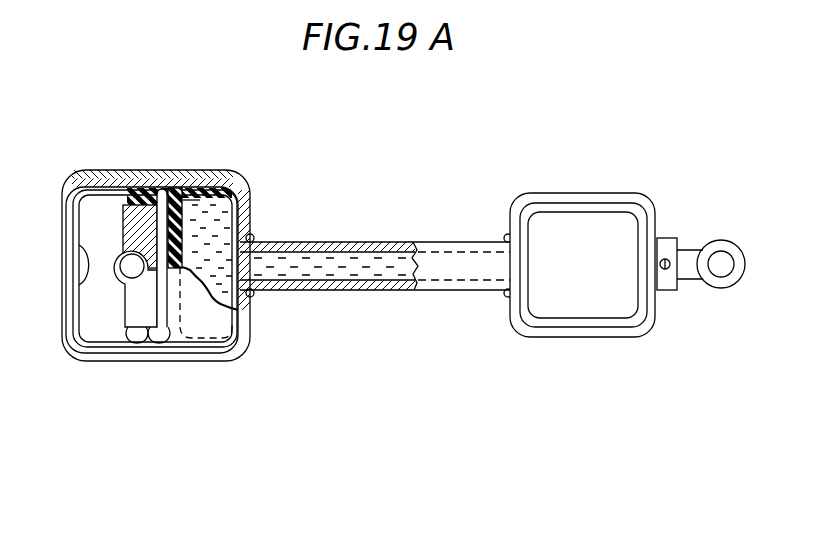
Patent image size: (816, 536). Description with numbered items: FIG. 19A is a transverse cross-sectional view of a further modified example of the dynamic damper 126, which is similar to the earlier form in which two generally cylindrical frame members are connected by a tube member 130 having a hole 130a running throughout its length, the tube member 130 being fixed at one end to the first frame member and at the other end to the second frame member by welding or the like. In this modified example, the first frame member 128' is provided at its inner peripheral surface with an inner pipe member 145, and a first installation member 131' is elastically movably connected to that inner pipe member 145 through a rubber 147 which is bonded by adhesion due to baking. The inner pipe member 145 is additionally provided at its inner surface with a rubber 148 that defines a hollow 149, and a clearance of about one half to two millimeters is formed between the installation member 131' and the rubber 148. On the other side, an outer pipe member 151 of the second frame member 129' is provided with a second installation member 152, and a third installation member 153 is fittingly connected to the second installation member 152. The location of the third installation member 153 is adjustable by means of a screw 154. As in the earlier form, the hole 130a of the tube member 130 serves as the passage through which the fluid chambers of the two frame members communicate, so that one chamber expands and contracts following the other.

The dynamic damper 126 is at (330, 203).
The first frame member 128' is at (158, 229).
The inner pipe member 145 is at (102, 172).
The first installation member 131' is at (179, 197).
The rubber 147 is at (127, 202).
The rubber 148 is at (203, 190).
The hollow 149 is at (228, 216).
The tube member 130 is at (382, 243).
The hole 130a is at (357, 270).
The second frame member 129' is at (554, 233).
The outer pipe member 151 is at (513, 207).
The second installation member 152 is at (667, 238).
The third installation member 153 is at (723, 247).
The screw 154 is at (668, 270).